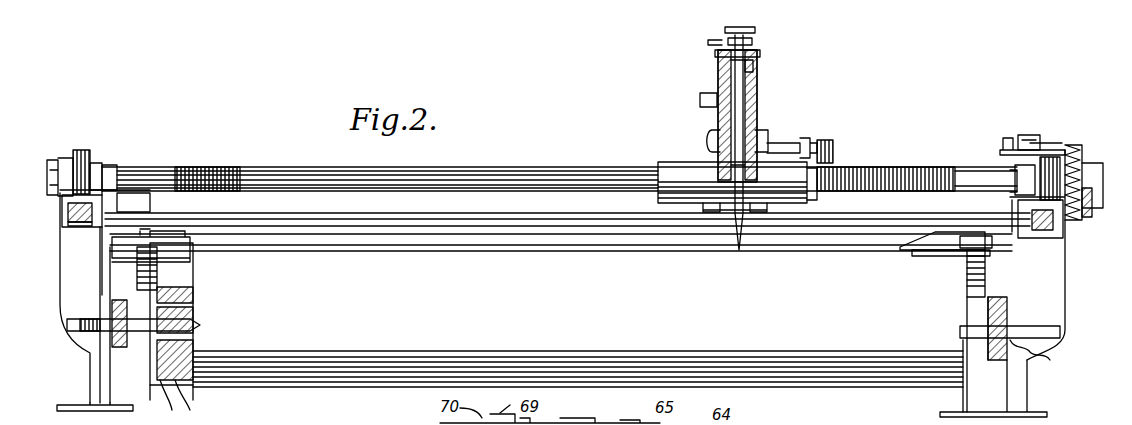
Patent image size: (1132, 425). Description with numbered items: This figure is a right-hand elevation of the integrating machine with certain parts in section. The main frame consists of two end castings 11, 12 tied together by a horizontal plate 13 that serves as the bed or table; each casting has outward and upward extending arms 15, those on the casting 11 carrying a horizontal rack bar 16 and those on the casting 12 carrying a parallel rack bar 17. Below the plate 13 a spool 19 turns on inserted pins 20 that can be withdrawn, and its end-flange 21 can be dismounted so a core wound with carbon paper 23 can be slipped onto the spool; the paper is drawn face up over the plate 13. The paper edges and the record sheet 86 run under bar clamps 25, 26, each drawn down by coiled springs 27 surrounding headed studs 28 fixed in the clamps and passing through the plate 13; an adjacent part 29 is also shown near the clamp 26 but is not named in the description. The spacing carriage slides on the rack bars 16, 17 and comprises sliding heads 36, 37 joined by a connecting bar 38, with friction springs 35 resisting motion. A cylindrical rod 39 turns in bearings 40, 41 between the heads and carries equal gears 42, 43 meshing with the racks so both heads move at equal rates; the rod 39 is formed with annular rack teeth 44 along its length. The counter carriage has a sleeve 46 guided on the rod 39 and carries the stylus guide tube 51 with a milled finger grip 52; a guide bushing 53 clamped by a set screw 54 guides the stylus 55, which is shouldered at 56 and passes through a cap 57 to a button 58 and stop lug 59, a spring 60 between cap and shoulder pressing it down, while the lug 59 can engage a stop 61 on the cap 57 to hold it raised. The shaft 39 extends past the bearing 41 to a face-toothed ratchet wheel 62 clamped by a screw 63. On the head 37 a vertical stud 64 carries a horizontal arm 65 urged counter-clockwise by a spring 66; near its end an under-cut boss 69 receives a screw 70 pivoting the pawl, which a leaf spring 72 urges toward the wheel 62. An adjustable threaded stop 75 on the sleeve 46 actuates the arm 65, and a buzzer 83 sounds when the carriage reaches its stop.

The end casting 11 is at (100, 378).
The end casting 12 is at (1010, 395).
The horizontal plate 13 is at (137, 250).
The arms 15 is at (75, 240).
The rack bar 16 is at (66, 212).
The rack bar 17 is at (965, 250).
The spool 19 is at (190, 402).
The inserted pins 20 is at (67, 322).
The end-flange 21 is at (963, 405).
The carbon paper 23 is at (772, 340).
The bar clamp 25 is at (168, 238).
The bar clamp 26 is at (925, 252).
The coiled springs 27 is at (137, 262).
The headed studs 28 is at (137, 280).
The guide bar 29 is at (905, 252).
The friction springs 35 is at (1056, 235).
The sliding head 36 is at (110, 200).
The sliding head 37 is at (1010, 208).
The connecting bar 38 is at (490, 228).
The cylindrical rod 39 is at (455, 180).
The bearing 40 is at (97, 165).
The bearing 41 is at (1017, 176).
The gear 42 is at (82, 150).
The gear 43 is at (1012, 175).
The annular rack teeth 44 is at (860, 172).
The sleeve 46 is at (676, 175).
The stylus guide tube 51 is at (757, 112).
The milled finger grip 52 is at (708, 142).
The guide bushing 53 is at (762, 130).
The set screw 54 is at (700, 100).
The stylus 55 is at (738, 232).
The shoulder 56 is at (755, 95).
The cap 57 is at (760, 53).
The button 58 is at (750, 30).
The stop lug 59 is at (754, 42).
The spring 60 is at (760, 69).
The stop 61 is at (718, 42).
The ratchet wheel 62 is at (1072, 145).
The screw 63 is at (1088, 212).
The vertical stud 64 is at (1050, 155).
The horizontal arm 65 is at (1032, 135).
The spring 66 is at (1090, 165).
The under-cut boss 69 is at (1008, 138).
The screw 70 is at (1030, 135).
The leaf spring 72 is at (550, 413).
The adjustable threaded stop 75 is at (830, 142).
The buzzer 83 is at (975, 300).
The record sheet 86 is at (272, 244).